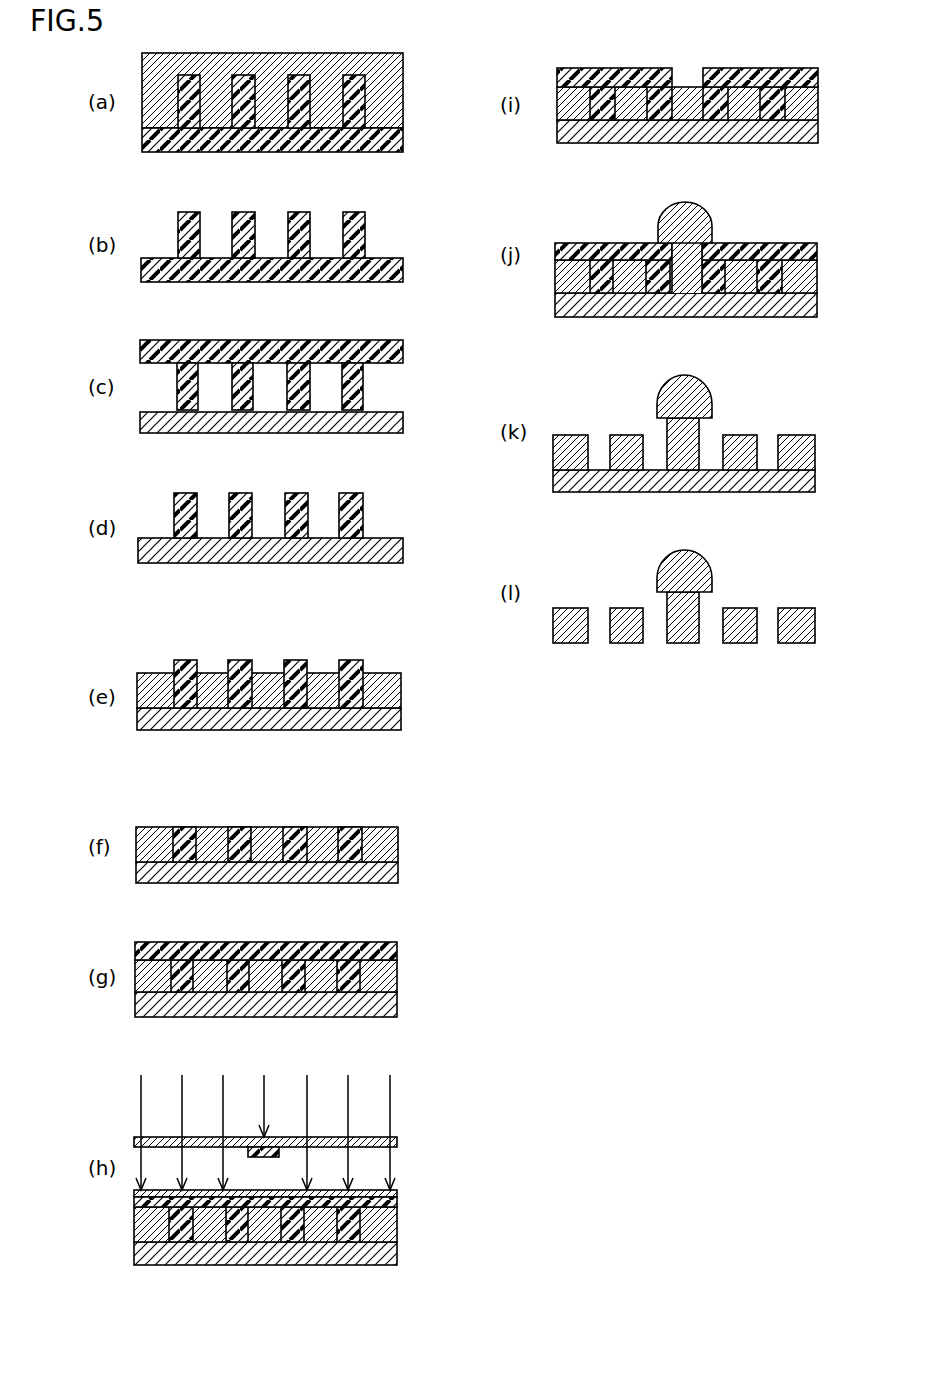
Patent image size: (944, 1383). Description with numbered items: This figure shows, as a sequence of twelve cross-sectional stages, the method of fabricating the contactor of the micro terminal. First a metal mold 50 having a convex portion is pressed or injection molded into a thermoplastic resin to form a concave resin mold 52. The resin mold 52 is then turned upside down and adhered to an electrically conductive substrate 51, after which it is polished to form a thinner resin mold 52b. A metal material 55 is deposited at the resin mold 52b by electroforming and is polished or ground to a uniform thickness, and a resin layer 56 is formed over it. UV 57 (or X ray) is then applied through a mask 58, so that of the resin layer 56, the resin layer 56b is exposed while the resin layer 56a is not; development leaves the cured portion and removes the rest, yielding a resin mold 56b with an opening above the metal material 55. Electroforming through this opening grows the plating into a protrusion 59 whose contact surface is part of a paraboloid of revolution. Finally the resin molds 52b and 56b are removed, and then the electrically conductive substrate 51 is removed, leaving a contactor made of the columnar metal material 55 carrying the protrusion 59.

The metal mold 50 is at (390, 110).
The electrically conductive substrate 51 is at (385, 424).
The resin mold 52 is at (387, 140).
The resin mold 52b is at (353, 519).
The metal material 55 is at (385, 690).
The resin layer 56 is at (382, 953).
The resin layer 56a is at (272, 1190).
The resin layer 56b is at (382, 1202).
The UV 57 is at (392, 1102).
The mask 58 is at (397, 1147).
The protrusion 59 is at (693, 223).